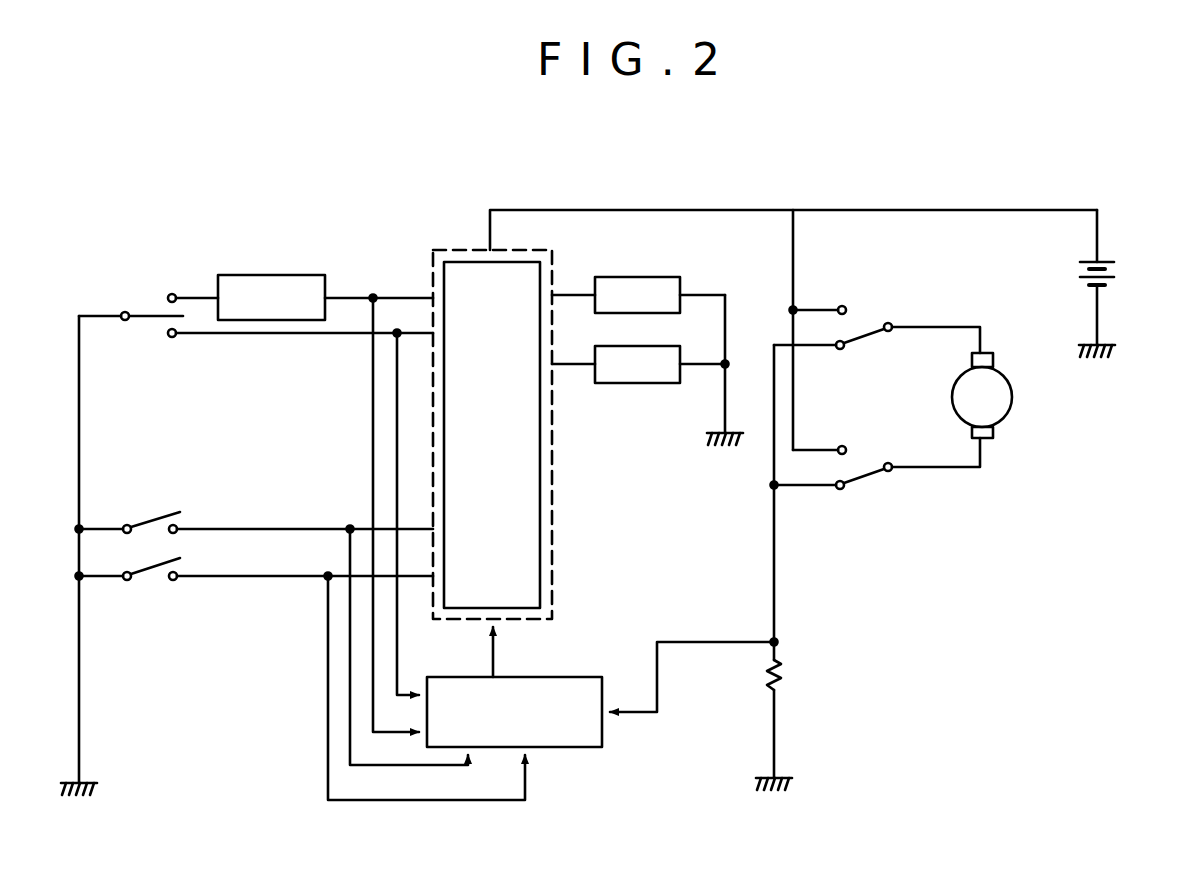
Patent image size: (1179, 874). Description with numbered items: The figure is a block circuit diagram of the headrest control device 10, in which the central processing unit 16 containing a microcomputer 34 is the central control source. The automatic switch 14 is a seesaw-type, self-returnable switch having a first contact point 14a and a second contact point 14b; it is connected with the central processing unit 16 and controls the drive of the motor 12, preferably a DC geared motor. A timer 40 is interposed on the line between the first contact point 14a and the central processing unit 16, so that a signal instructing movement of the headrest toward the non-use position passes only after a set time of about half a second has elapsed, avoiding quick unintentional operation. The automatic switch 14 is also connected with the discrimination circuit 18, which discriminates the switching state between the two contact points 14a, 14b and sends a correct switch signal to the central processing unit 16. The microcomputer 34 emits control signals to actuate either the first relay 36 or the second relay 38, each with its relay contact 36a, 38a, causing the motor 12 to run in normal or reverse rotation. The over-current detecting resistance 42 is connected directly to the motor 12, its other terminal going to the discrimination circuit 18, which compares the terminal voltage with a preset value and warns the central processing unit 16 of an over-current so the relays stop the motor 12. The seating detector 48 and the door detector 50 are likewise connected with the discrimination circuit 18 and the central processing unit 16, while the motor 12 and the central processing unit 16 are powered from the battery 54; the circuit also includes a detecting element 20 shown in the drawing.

The headrest control device 10 is at (1007, 128).
The motor 12 is at (1011, 402).
The automatic switch 14 is at (162, 314).
The first contact point 14a is at (174, 294).
The second contact point 14b is at (173, 338).
The central processing unit 16 is at (553, 509).
The discrimination circuit 18 is at (564, 748).
The current detecting means 20 is at (797, 664).
The microcomputer 34 is at (535, 587).
The first relay 36 is at (668, 277).
The relay contact 36a is at (865, 330).
The second relay 38 is at (667, 384).
The relay contact 38a is at (862, 472).
The timer 40 is at (316, 275).
The over-current detecting resistance 42 is at (767, 690).
The seating detector 48 is at (170, 513).
The door detector 50 is at (165, 560).
The battery 54 is at (1107, 262).